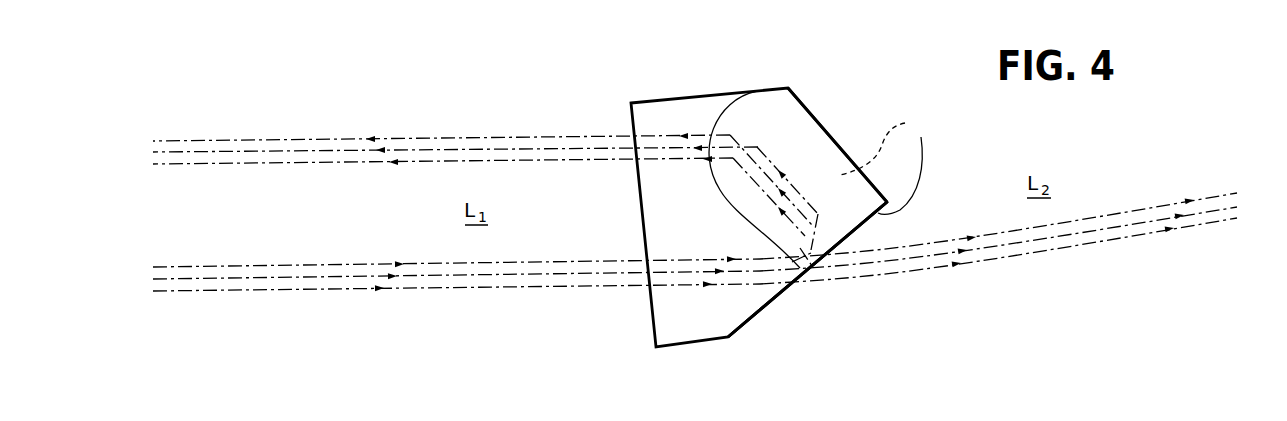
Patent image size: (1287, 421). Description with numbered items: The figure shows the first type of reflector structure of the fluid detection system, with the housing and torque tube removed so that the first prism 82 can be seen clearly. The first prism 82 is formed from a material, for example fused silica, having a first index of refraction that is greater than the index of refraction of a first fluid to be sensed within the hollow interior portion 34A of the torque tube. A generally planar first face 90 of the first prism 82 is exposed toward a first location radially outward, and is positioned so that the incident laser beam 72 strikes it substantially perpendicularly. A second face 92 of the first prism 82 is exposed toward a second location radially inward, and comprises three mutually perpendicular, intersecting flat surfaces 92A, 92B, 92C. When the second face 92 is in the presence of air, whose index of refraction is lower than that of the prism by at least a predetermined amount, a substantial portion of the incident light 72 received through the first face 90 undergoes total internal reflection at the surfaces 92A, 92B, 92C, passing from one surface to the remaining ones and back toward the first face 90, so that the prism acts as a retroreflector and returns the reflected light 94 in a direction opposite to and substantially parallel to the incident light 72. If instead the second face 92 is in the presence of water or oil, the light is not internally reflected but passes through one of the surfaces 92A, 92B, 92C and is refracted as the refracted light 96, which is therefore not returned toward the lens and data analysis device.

The hollow interior portion 34A is at (1163, 172).
The incident laser beam 72 is at (253, 293).
The first prism 82 is at (757, 315).
The first face 90 is at (643, 233).
The second face 92 is at (870, 182).
The first surface 92A is at (780, 293).
The second surface 92B is at (790, 117).
The third surface 92C is at (822, 153).
The reflected light 94 is at (201, 141).
The refracted light 96 is at (1117, 240).